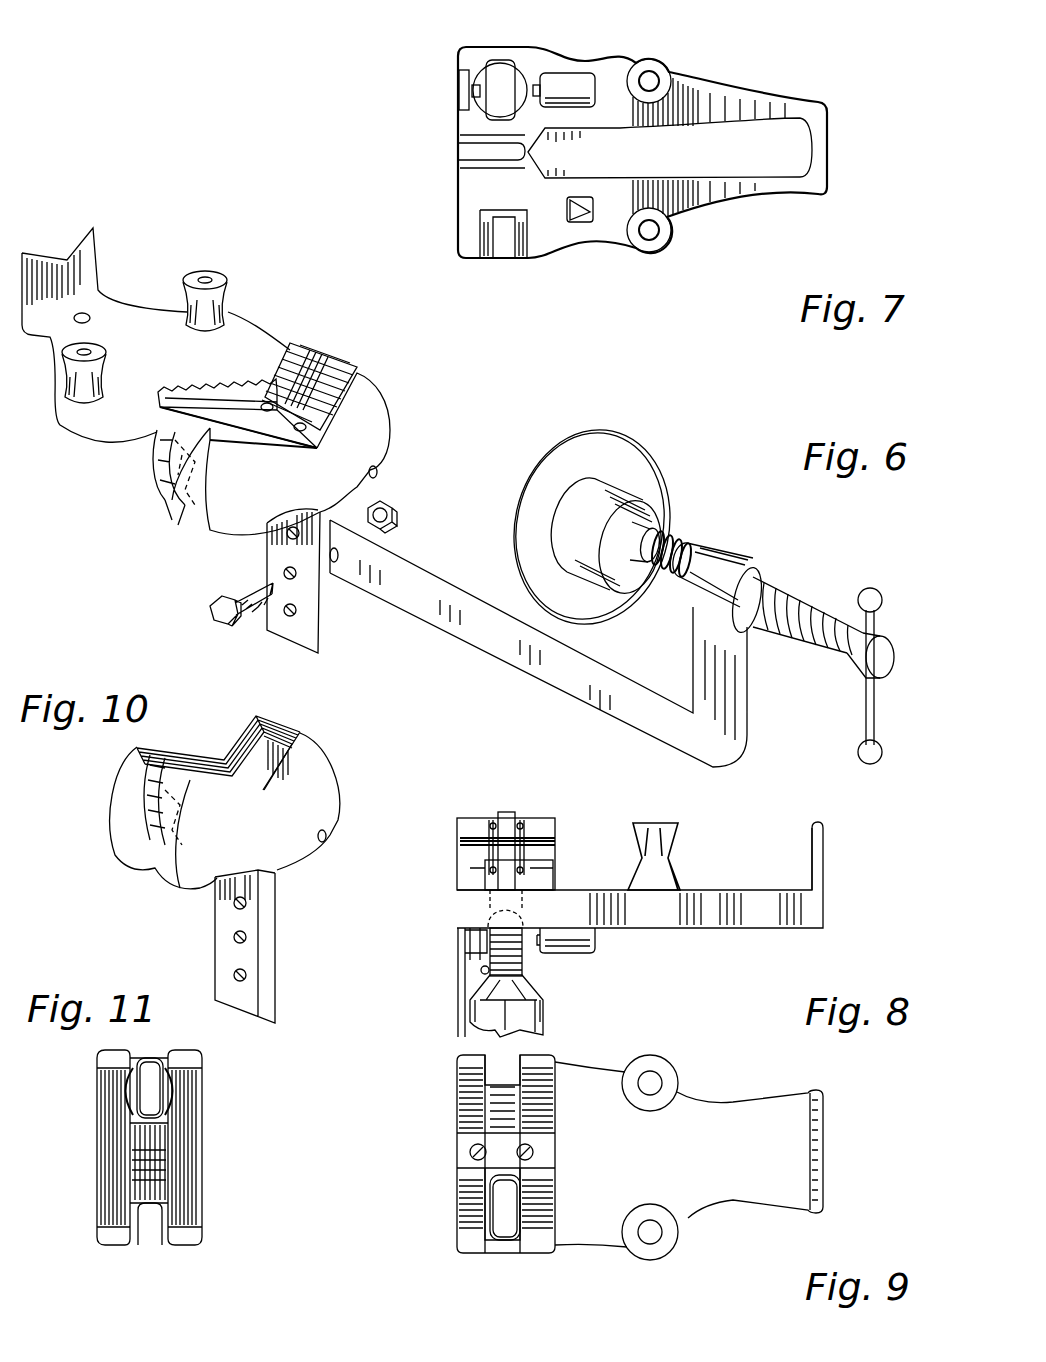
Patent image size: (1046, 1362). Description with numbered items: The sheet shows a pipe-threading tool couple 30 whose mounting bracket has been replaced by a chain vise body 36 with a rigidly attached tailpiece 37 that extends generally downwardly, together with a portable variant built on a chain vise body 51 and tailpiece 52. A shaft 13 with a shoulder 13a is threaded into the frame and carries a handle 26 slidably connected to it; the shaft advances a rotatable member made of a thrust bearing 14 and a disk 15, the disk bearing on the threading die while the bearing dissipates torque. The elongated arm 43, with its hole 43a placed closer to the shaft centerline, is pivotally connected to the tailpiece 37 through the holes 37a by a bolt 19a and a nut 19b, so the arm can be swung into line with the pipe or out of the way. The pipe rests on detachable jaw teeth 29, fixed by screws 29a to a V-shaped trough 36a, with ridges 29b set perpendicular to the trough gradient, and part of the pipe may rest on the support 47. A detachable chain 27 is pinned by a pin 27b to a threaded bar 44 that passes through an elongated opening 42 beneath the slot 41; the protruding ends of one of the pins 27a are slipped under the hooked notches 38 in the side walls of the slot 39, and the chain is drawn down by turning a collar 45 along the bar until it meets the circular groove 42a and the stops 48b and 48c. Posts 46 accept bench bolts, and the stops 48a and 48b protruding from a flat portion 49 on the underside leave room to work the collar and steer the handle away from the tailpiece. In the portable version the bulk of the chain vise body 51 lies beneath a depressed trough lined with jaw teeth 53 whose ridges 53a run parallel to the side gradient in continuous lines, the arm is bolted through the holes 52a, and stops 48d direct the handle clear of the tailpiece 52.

In FIG. 6, the shaft 13 is at (755, 585).
In FIG. 6, the shoulder 13a is at (660, 520).
In FIG. 6, the thrust bearing 14 is at (607, 560).
In FIG. 6, the disk 15 is at (560, 460).
In FIG. 6, the bolt 19a is at (226, 618).
In FIG. 6, the nut 19b is at (398, 516).
In FIG. 6, the handle 26 is at (866, 695).
In FIG. 8, the chain 27 is at (503, 815).
In FIG. 8, the pins 27a is at (525, 828).
In FIG. 8, the pin 27b is at (528, 880).
In FIG. 6, the jaw teeth 29 is at (290, 355).
In FIG. 8, the jaw teeth 29 is at (470, 828).
In FIG. 6, the screws 29a is at (265, 402).
In FIG. 9, the screws 29a is at (535, 1152).
In FIG. 9, the ridges 29b is at (470, 1100).
In FIG. 6, the tool couple 30 is at (840, 603).
In FIG. 7, the chain vise body 36 is at (773, 168).
In FIG. 6, the chain vise body 36 is at (380, 440).
In FIG. 8, the chain vise body 36 is at (733, 905).
In FIG. 9, the chain vise body 36 is at (600, 1244).
In FIG. 6, the V-shaped trough 36a is at (378, 375).
In FIG. 7, the tailpiece 37 is at (465, 152).
In FIG. 6, the tailpiece 37 is at (320, 625).
In FIG. 8, the tailpiece 37 is at (462, 1003).
In FIG. 6, the holes 37a is at (288, 605).
In FIG. 8, the holes 37a is at (480, 970).
In FIG. 7, the hooked notches 38 is at (480, 234).
In FIG. 6, the hooked notches 38 is at (190, 500).
In FIG. 10, the hooked notches 38 is at (160, 855).
In FIG. 6, the slot 39 is at (195, 385).
In FIG. 10, the slot 39 is at (135, 775).
In FIG. 11, the slot 39 is at (170, 1200).
In FIG. 9, the slot 39 is at (518, 1110).
In FIG. 6, the slot 41 is at (340, 372).
In FIG. 10, the slot 41 is at (240, 780).
In FIG. 8, the slot 41 is at (490, 882).
In FIG. 9, the slot 41 is at (480, 1182).
In FIG. 7, the elongated opening 42 is at (500, 85).
In FIG. 11, the elongated opening 42 is at (150, 1090).
In FIG. 8, the elongated opening 42 is at (527, 910).
In FIG. 9, the elongated opening 42 is at (508, 1218).
In FIG. 7, the circular groove 42a is at (478, 113).
In FIG. 11, the circular groove 42a is at (178, 1100).
In FIG. 8, the circular groove 42a is at (480, 918).
In FIG. 6, the elongated arm 43 is at (640, 692).
In FIG. 6, the hole 43a is at (336, 565).
In FIG. 8, the threaded bar 44 is at (522, 955).
In FIG. 8, the collar 45 is at (540, 998).
In FIG. 7, the posts 46 is at (665, 78).
In FIG. 6, the posts 46 is at (187, 278).
In FIG. 8, the posts 46 is at (660, 842).
In FIG. 9, the posts 46 is at (668, 1215).
In FIG. 6, the support 47 is at (82, 260).
In FIG. 8, the support 47 is at (816, 855).
In FIG. 9, the support 47 is at (812, 1175).
In FIG. 7, the stop 48a is at (585, 222).
In FIG. 7, the stop 48b is at (575, 80).
In FIG. 8, the stop 48b is at (590, 948).
In FIG. 7, the stop 48c is at (462, 75).
In FIG. 6, the stop 48c is at (380, 470).
In FIG. 10, the stops 48d is at (330, 835).
In FIG. 7, the flat portion 49 is at (787, 115).
In FIG. 10, the chain vise body 51 is at (280, 855).
In FIG. 10, the tailpiece 52 is at (268, 990).
In FIG. 10, the holes 52a is at (236, 970).
In FIG. 10, the jaw teeth 53 is at (270, 770).
In FIG. 11, the ridges 53a is at (150, 1220).